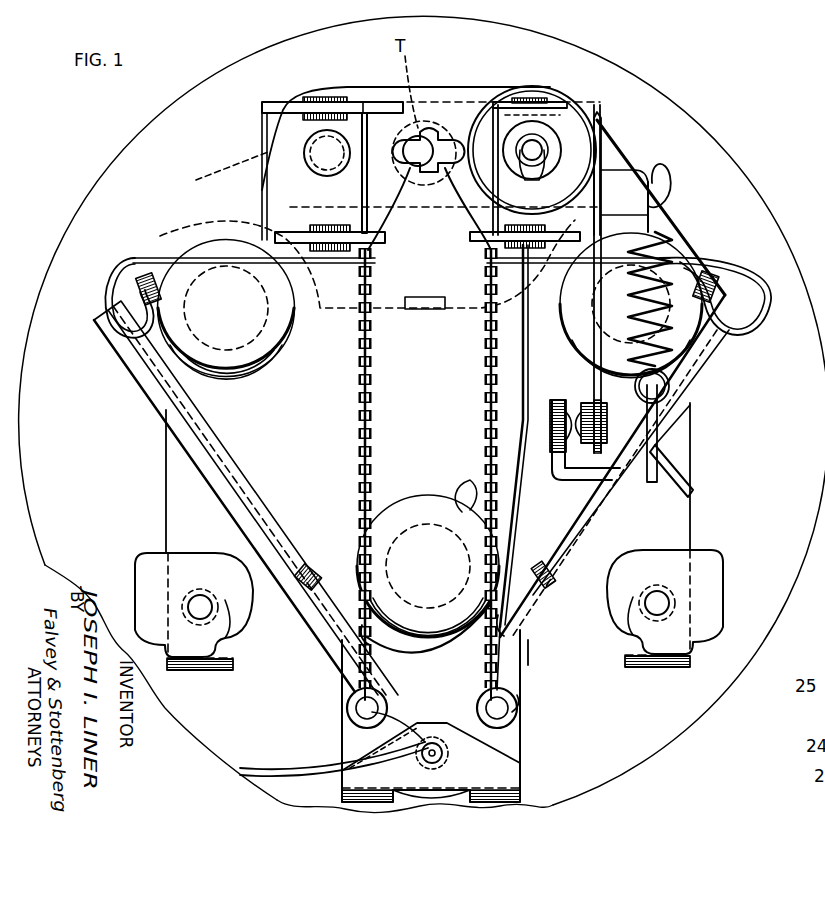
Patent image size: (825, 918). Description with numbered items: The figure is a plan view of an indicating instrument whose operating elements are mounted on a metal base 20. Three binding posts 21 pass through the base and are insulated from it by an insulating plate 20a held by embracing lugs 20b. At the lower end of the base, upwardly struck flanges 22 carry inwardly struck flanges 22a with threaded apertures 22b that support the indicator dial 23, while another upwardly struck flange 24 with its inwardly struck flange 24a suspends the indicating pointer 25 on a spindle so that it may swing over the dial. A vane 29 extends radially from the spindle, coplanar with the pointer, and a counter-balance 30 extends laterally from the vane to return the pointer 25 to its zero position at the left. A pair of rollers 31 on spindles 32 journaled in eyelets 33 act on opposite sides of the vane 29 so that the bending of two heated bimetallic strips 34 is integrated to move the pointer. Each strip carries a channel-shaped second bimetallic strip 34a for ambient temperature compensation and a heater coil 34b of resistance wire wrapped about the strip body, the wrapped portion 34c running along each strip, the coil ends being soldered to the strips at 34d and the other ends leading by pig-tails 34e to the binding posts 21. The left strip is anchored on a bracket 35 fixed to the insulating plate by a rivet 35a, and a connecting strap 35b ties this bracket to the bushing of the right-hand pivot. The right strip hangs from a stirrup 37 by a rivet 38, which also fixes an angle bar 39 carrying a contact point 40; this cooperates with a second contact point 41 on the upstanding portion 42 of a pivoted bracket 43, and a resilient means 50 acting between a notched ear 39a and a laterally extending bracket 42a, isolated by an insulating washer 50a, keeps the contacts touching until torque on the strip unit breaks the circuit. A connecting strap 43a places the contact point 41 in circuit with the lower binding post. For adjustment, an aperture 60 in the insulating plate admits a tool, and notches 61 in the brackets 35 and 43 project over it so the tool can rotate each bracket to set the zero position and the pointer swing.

The base 20 is at (690, 242).
The insulating plate 20a is at (630, 168).
The embracing lugs 20b is at (427, 298).
The binding posts 21 is at (226, 372).
The upwardly struck flanges 22 is at (205, 668).
The inwardly struck flanges 22a is at (232, 640).
The threaded apertures 22b is at (200, 598).
The indicator dial 23 is at (814, 125).
The upwardly struck flange 24 is at (522, 790).
The inwardly struck flange 24a is at (525, 760).
The indicating pointer 25 is at (392, 683).
The vane 29 is at (436, 722).
The counter-balance 30 is at (300, 768).
The rollers 31 is at (348, 706).
The spindles 32 is at (532, 660).
The eyelets 33 is at (527, 700).
The bimetallic strips 34 is at (360, 530).
The second bimetallic strip 34a is at (362, 188).
The heater coil 34b is at (470, 237).
The chain 34c is at (373, 395).
The soldered heater coil ends 34d is at (396, 628).
The pig-tails 34e is at (223, 263).
The bracket 35 is at (265, 128).
The rivet 35a is at (306, 158).
The connecting strap 35b is at (215, 172).
The stirrup 37 is at (560, 118).
The rivet 38 is at (527, 100).
The angle bar 39 is at (600, 165).
The notched ear 39a is at (668, 180).
The contact point 40 is at (592, 405).
The second contact point 41 is at (556, 400).
The upstanding portion 42 is at (555, 445).
The laterally extending bracket 42a is at (700, 480).
The bracket 43 is at (532, 400).
The connecting strap 43a is at (470, 490).
The resilient means 50 is at (670, 388).
The insulating washer 50a is at (668, 460).
The aperture 60 is at (423, 128).
The notches 61 is at (398, 135).